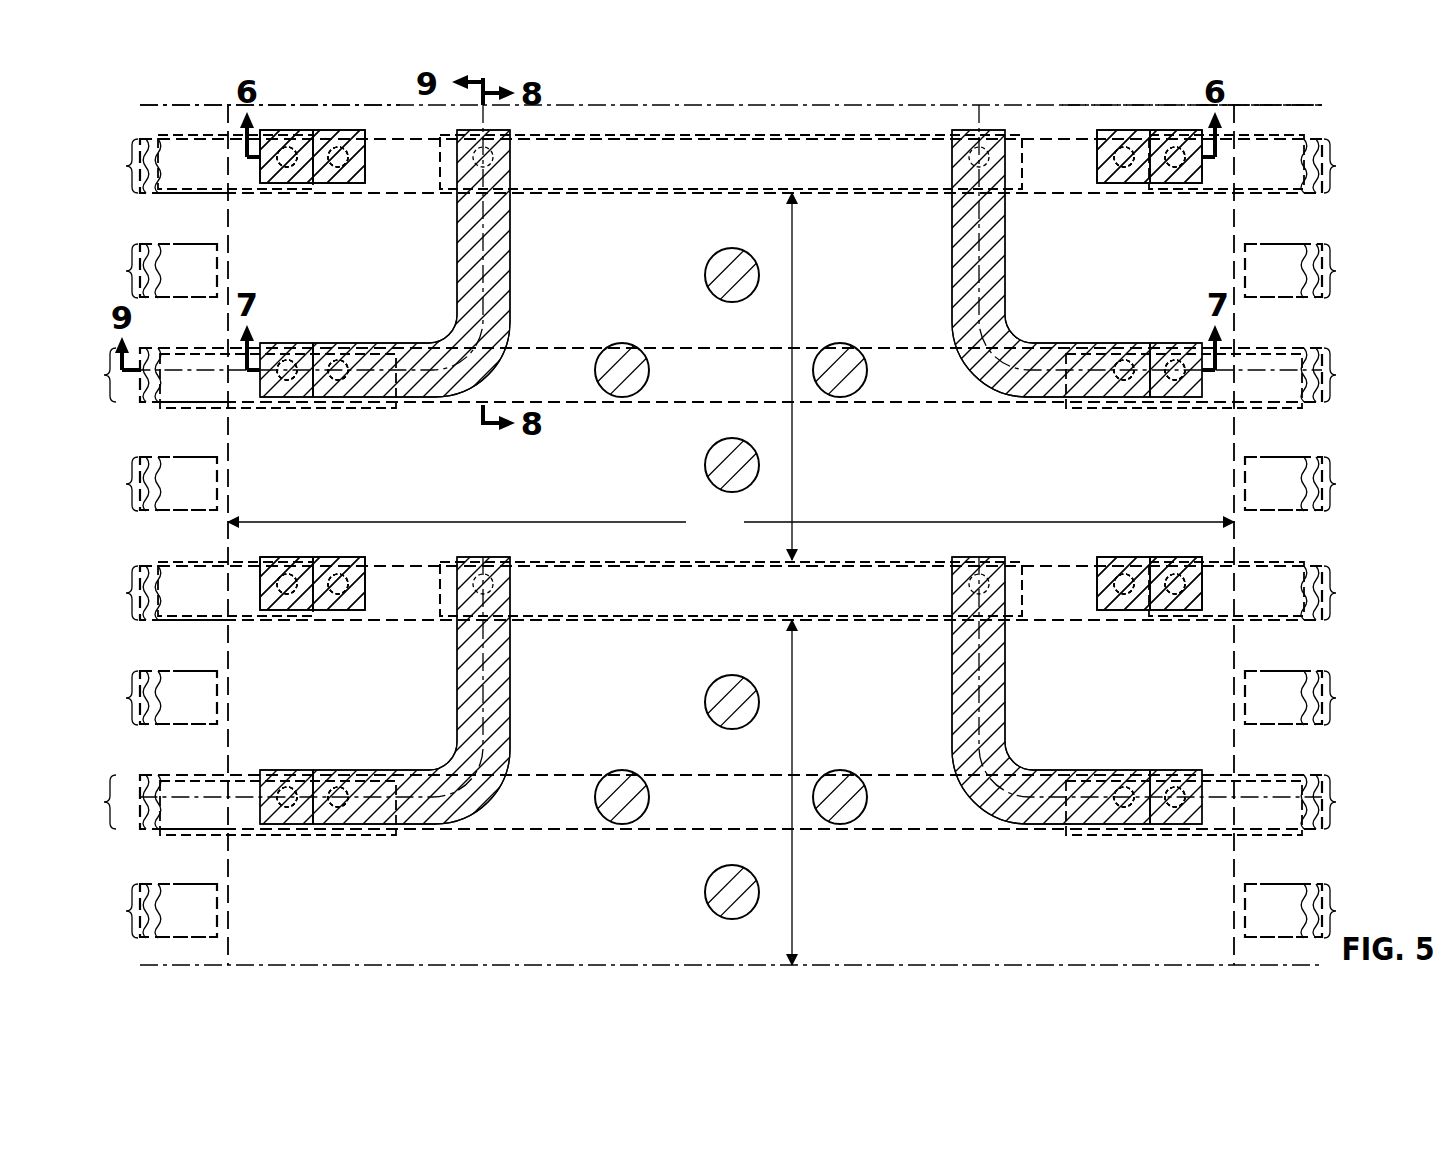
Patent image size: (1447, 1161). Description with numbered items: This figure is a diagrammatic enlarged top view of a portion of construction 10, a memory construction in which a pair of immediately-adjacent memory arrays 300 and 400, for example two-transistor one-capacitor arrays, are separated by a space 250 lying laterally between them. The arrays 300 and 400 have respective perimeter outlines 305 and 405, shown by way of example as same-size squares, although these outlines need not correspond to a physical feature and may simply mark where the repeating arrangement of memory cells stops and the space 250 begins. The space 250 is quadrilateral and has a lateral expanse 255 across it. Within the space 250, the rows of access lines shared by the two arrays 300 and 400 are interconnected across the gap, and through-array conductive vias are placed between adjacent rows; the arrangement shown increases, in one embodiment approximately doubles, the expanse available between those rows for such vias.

The construction 10 is at (1405, 131).
The space 250 is at (752, 98).
The lateral expanse 255 is at (731, 521).
The memory array 300 is at (193, 118).
The perimeter outline 305 is at (228, 492).
The memory array 400 is at (1253, 117).
The perimeter outline 405 is at (1234, 492).